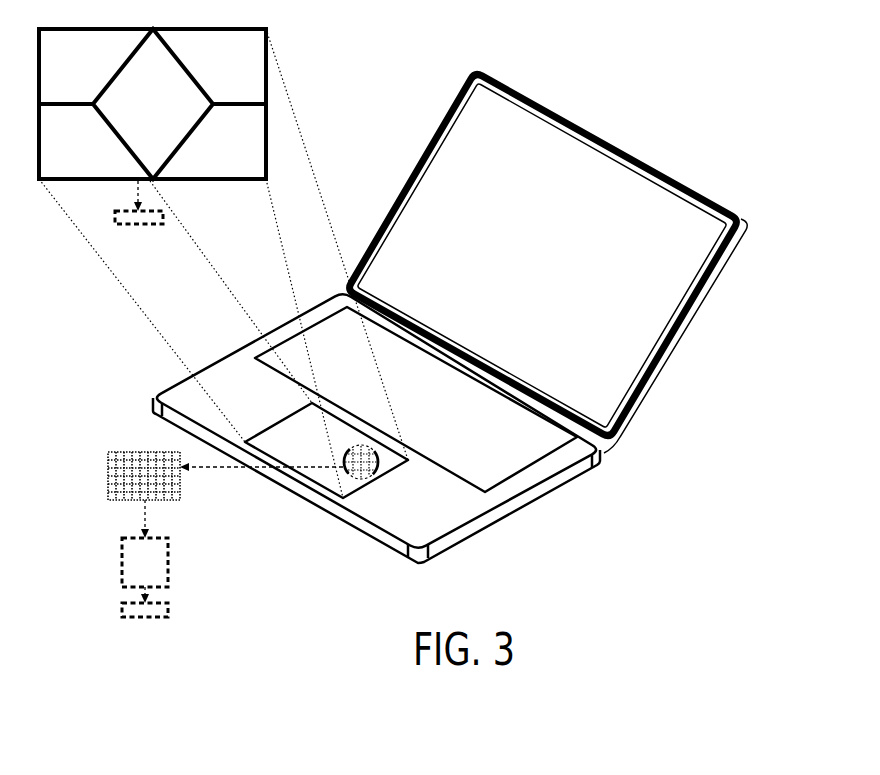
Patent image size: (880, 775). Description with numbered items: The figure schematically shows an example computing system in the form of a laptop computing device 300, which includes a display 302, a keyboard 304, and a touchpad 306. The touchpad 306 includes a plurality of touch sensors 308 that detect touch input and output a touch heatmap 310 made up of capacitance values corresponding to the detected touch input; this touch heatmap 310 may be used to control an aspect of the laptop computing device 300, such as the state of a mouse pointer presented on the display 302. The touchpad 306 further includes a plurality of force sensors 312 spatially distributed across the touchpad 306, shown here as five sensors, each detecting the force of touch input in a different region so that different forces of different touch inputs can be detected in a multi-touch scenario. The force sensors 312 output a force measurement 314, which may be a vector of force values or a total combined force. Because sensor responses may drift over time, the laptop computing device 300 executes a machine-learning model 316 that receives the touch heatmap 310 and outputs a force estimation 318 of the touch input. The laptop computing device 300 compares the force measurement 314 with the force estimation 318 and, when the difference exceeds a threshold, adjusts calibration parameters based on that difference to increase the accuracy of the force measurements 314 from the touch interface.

The laptop computing device 300 is at (478, 68).
The display 302 is at (460, 148).
The keyboard 304 is at (447, 418).
The touchpad 306 is at (331, 456).
The touch sensors 308 is at (374, 475).
The touch heatmap 310 is at (108, 482).
The force sensors 312 is at (241, 44).
The force measurement 314 is at (115, 218).
The machine-learning model 316 is at (122, 566).
The force estimation 318 is at (122, 612).